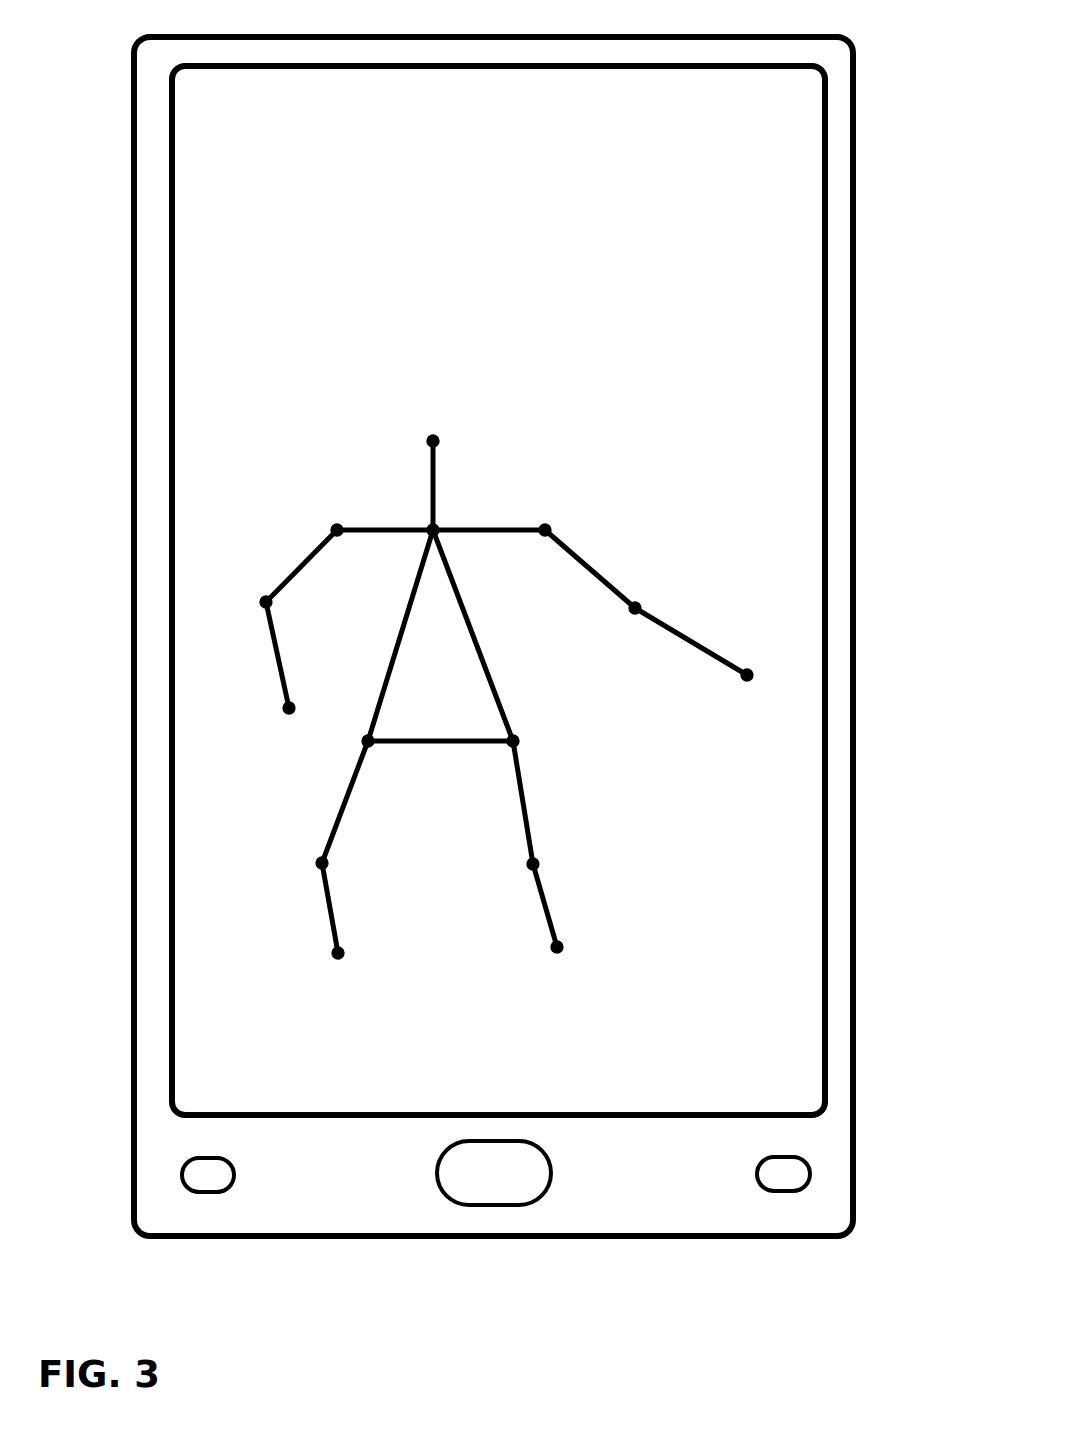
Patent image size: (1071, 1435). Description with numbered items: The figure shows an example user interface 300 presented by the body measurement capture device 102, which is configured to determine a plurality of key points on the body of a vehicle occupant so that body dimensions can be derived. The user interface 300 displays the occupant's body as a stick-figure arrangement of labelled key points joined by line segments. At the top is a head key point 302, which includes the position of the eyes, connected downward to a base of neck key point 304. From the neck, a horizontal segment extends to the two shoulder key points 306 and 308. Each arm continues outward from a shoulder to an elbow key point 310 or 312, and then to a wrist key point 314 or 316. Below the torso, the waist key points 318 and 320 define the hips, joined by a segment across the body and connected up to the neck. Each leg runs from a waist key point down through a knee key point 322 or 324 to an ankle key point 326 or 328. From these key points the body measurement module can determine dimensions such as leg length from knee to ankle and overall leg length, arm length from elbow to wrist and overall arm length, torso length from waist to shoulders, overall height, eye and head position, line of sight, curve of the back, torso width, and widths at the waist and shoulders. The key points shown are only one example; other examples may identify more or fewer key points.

The body measurement capture device 102 is at (848, 40).
The user interface 300 is at (628, 279).
The head key point 302 is at (435, 434).
The base of neck key point 304 is at (438, 524).
The shoulder key point 306 is at (333, 522).
The shoulder key point 308 is at (549, 524).
The elbow key point 310 is at (263, 594).
The elbow key point 312 is at (639, 602).
The wrist key point 314 is at (285, 702).
The wrist key point 316 is at (750, 668).
The waist key point 318 is at (366, 732).
The waist key point 320 is at (517, 734).
The knee key point 322 is at (320, 855).
The knee key point 324 is at (537, 858).
The ankle key point 326 is at (334, 945).
The ankle key point 328 is at (560, 940).